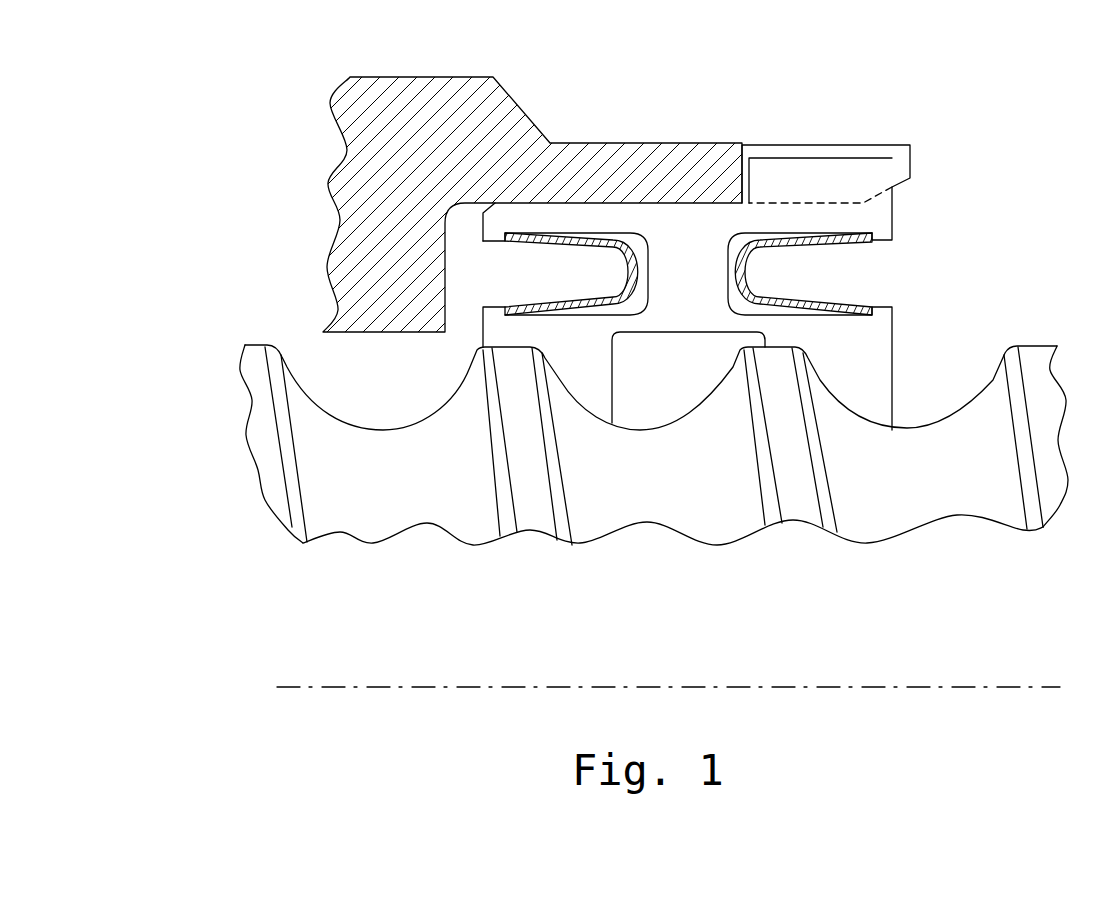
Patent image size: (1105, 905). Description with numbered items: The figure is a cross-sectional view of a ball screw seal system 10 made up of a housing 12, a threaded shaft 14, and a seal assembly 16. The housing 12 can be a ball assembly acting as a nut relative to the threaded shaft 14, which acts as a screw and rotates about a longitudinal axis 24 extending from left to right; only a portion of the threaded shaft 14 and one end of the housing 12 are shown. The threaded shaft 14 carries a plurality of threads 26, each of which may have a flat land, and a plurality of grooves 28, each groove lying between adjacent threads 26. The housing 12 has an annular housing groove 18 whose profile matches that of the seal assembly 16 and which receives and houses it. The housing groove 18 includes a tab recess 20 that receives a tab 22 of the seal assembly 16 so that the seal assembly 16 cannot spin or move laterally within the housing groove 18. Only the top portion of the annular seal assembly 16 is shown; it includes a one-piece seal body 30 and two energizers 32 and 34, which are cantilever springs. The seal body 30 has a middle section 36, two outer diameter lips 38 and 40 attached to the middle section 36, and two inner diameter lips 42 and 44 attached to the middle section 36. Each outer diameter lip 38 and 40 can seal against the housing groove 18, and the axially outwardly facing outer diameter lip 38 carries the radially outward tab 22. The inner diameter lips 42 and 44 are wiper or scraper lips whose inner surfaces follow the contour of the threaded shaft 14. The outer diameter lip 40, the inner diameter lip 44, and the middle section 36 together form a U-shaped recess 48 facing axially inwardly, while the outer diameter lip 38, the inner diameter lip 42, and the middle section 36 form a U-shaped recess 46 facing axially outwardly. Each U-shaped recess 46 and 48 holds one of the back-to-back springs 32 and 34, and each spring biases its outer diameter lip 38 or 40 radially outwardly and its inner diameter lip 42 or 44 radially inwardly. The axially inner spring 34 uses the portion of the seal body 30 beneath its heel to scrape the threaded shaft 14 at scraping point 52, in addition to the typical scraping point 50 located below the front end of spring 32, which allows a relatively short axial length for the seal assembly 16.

The ball screw seal system 10 is at (972, 127).
The housing 12 is at (408, 77).
The threaded shaft 14 is at (623, 478).
The seal assembly 16 is at (911, 211).
The housing groove 18 is at (447, 264).
The tab recess 20 is at (760, 146).
The tab 22 is at (848, 158).
The longitudinal axis 24 is at (777, 687).
The thread 26 is at (528, 515).
The groove 28 is at (401, 492).
The seal body 30 is at (703, 236).
The energizer 32 is at (805, 248).
The energizer 34 is at (580, 246).
The middle section 36 is at (701, 307).
The outer diameter lip 38 is at (861, 227).
The outer diameter lip 40 is at (543, 227).
The inner diameter lip 42 is at (871, 372).
The inner diameter lip 44 is at (594, 372).
The U-shaped recess 46 is at (744, 241).
The U-shaped recess 48 is at (634, 241).
The scraping point 50 is at (899, 423).
The scraping point 52 is at (622, 419).